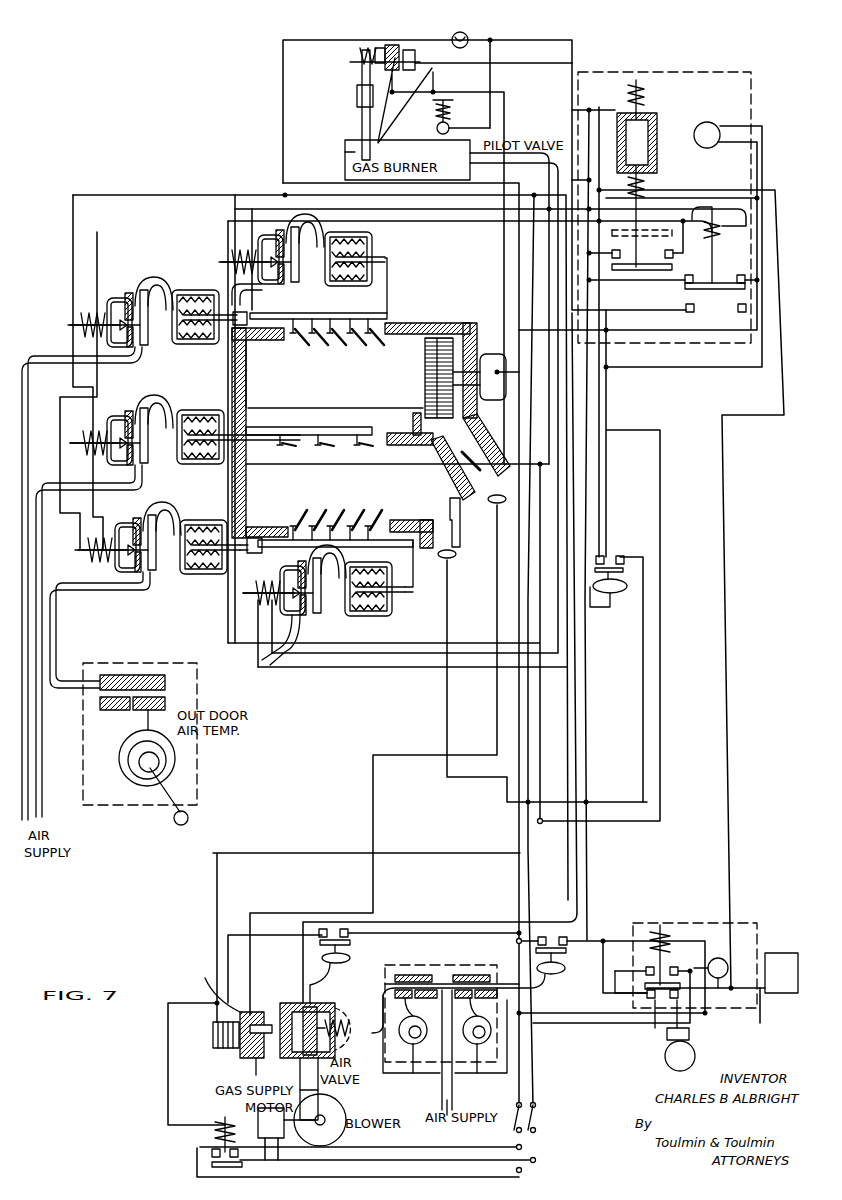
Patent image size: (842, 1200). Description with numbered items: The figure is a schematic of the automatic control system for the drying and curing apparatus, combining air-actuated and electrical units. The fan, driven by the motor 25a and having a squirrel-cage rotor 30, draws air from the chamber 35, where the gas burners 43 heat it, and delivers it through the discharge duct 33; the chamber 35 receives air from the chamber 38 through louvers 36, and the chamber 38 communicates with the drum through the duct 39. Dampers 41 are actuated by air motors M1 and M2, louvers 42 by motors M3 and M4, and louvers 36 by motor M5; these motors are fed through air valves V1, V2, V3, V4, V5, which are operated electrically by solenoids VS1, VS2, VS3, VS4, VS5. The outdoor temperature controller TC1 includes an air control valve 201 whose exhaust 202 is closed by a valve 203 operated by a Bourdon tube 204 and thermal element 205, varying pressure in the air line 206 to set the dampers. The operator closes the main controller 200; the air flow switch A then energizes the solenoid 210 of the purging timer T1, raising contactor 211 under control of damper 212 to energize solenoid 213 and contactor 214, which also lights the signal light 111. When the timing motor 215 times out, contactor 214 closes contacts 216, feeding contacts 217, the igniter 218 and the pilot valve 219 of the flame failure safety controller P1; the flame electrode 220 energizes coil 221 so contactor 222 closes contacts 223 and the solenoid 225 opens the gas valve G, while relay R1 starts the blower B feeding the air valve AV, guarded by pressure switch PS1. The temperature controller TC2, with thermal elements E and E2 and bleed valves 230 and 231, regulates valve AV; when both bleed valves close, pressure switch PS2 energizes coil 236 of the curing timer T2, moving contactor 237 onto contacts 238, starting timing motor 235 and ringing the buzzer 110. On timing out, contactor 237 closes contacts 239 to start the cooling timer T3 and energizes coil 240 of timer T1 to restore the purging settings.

The signal light 111 is at (468, 36).
The solenoid 210 is at (640, 85).
The contactor 211 is at (648, 263).
The damper 212 is at (657, 145).
The solenoid 213 is at (717, 245).
The contactor 214 is at (415, 58).
The timing motor 215 is at (715, 124).
The contacts 216 is at (738, 308).
The contacts 217 is at (394, 78).
The electric igniter 218 is at (405, 105).
The pilot valve 219 is at (447, 123).
The flame electrode 220 is at (362, 123).
The coil 221 is at (352, 58).
The contactor 222 is at (398, 50).
The contacts 223 is at (378, 48).
The coil 240 is at (648, 190).
The gas burners 43 is at (345, 155).
The squirrel-cage rotor 30 is at (437, 345).
The motor 25a is at (488, 352).
The discharge duct 33 is at (470, 480).
The chamber 35 is at (350, 391).
The louvers 36 is at (330, 447).
The chamber 38 is at (308, 496).
The duct 39 is at (450, 532).
The louvers or dampers 41 is at (338, 336).
The louvers 42 is at (336, 522).
The air control valve 201 is at (110, 675).
The exhaust 202 is at (118, 710).
The valve 203 is at (157, 710).
The Bourdon tube 204 is at (165, 770).
The thermal element 205 is at (188, 816).
The air line 206 is at (40, 638).
The main electrical controller 200 is at (536, 1118).
The solenoid 225 is at (213, 1045).
The bleed valve 230 is at (418, 1035).
The bleed valve 231 is at (470, 1035).
The timing motor 235 is at (725, 958).
The coil 236 is at (655, 937).
The contactor 237 is at (648, 1000).
The contacts 238 is at (665, 952).
The contacts 239 is at (674, 1000).
The buzzer 110 is at (650, 1035).
The air valve V1 is at (126, 296).
The air valve V2 is at (296, 288).
The air valve V3 is at (136, 521).
The air valve V4 is at (320, 616).
The air valve V5 is at (128, 414).
The damper motor M1 is at (195, 290).
The damper motor M2 is at (352, 286).
The damper motor M3 is at (203, 520).
The damper motor M4 is at (378, 616).
The damper motor M5 is at (203, 410).
The electric solenoid VS1 is at (78, 318).
The electric solenoid VS2 is at (232, 246).
The electric solenoid VS3 is at (73, 523).
The electric solenoid VS4 is at (258, 606).
The electric solenoid VS5 is at (92, 452).
The flame failure safety controller P1 is at (357, 98).
The purging timer T1 is at (711, 97).
The curing timer T2 is at (695, 948).
The cooling timer T3 is at (772, 955).
The thermal element E is at (498, 506).
The thermal element E2 is at (452, 564).
The air flow switch A is at (623, 570).
The outdoor temperature controller TC1 is at (120, 803).
The temperature controller TC2 is at (445, 1025).
The pressure switch PS1 is at (335, 930).
The pressure switch PS2 is at (480, 985).
The air supply control valve AV is at (292, 1003).
The gas valve G is at (244, 1058).
The blower B is at (330, 1113).
The relay R1 is at (205, 1152).